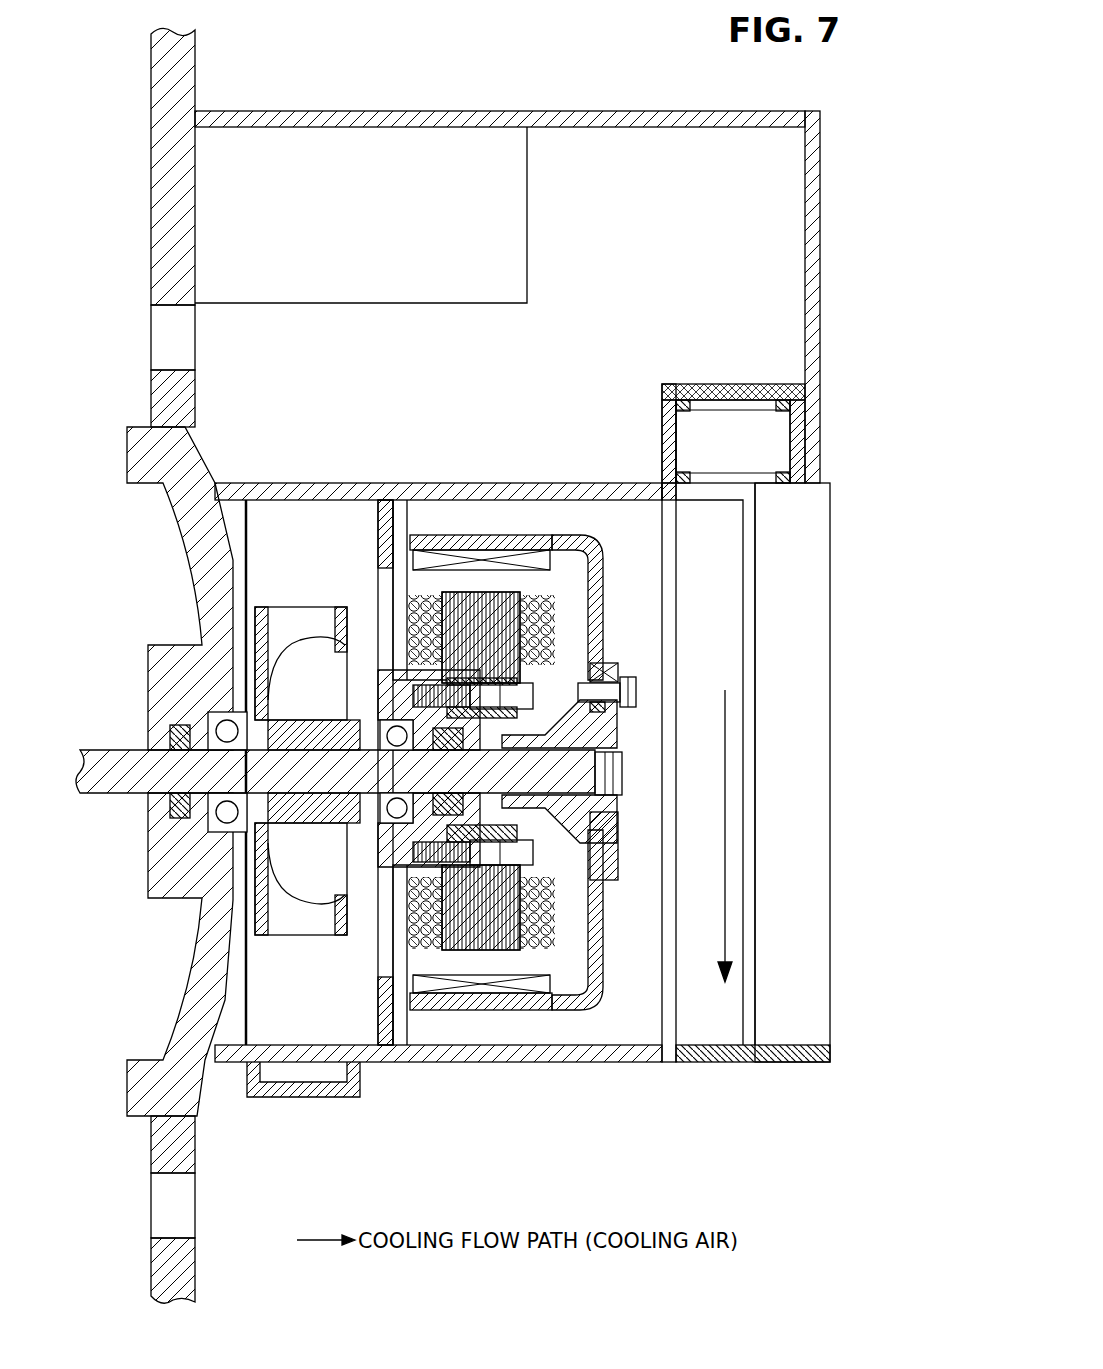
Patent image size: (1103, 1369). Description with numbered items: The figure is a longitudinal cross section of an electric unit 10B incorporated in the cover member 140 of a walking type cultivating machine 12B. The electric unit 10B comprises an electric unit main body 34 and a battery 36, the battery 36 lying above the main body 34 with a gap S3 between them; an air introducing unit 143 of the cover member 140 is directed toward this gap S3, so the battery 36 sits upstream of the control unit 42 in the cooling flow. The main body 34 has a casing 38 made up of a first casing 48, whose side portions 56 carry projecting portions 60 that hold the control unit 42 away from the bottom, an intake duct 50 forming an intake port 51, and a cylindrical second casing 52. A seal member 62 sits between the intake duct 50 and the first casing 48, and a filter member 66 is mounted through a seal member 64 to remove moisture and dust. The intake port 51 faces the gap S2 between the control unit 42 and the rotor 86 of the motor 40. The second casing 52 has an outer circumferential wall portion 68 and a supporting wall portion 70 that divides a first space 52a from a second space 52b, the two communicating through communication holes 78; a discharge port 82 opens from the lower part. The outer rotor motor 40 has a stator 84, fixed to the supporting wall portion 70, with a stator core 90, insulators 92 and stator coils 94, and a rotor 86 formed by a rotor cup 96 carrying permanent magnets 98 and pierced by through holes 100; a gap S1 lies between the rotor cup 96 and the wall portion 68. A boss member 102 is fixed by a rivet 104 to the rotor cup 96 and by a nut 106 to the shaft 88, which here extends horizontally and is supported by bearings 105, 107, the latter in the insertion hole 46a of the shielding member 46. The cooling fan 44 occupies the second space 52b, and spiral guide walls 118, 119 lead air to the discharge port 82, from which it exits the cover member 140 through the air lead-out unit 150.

The walking type cultivating machine 12B is at (796, 84).
The cover member 140 is at (172, 190).
The air introducing unit 143 is at (165, 305).
The battery 36 is at (462, 145).
The gap S3 is at (400, 325).
The electric unit 10B is at (783, 297).
The intake duct 50 is at (668, 445).
The intake port 51 is at (690, 418).
The filter member 66 is at (755, 392).
The seal member 62 is at (685, 478).
The seal member 64 is at (790, 397).
The electric unit main body 34 is at (854, 525).
The control unit 42 is at (815, 712).
The projecting portions 60 is at (745, 790).
The gap S2 is at (740, 860).
The motor 40 is at (622, 985).
The guide wall 119 is at (315, 492).
The guide wall 118 is at (240, 492).
The first casing 48 is at (703, 1073).
The second casing 52 is at (633, 1073).
The side portions 56 is at (785, 1063).
The casing 38 is at (751, 1094).
The outer circumferential wall portion 68 is at (560, 1065).
The first space 52a is at (467, 1032).
The second space 52b is at (318, 1042).
The discharge port 82 is at (290, 1075).
The communication holes 78 is at (385, 965).
The supporting wall portion 70 is at (385, 1010).
The shielding member 46 is at (145, 1072).
The air lead-out unit 150 is at (168, 1195).
The insertion hole 46a is at (160, 690).
The bearing 107 is at (215, 835).
The shaft 88 is at (95, 752).
The nut 106 is at (595, 785).
The boss member 102 is at (612, 724).
The rivet 104 is at (640, 695).
The cooling fan 44 is at (303, 612).
The bearing 105 is at (375, 820).
The through holes 100 is at (595, 655).
The rotor cup 96 is at (493, 545).
The gap S1 is at (538, 510).
The insulators 92 is at (560, 628).
The stator core 90 is at (560, 612).
The stator coils 94 is at (553, 603).
The rotor 86 is at (639, 858).
The permanent magnets 98 is at (540, 992).
The stator 84 is at (576, 942).